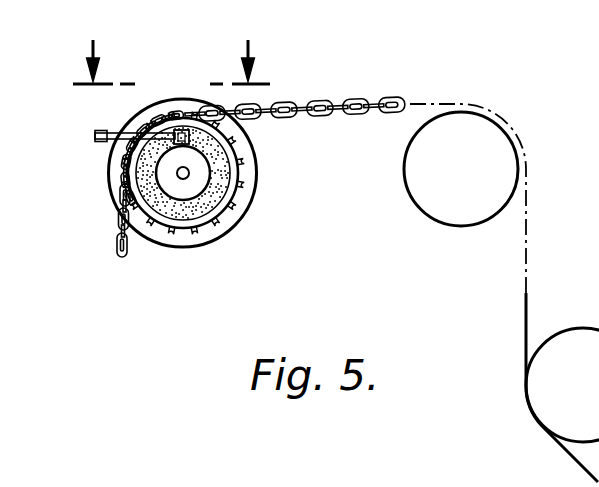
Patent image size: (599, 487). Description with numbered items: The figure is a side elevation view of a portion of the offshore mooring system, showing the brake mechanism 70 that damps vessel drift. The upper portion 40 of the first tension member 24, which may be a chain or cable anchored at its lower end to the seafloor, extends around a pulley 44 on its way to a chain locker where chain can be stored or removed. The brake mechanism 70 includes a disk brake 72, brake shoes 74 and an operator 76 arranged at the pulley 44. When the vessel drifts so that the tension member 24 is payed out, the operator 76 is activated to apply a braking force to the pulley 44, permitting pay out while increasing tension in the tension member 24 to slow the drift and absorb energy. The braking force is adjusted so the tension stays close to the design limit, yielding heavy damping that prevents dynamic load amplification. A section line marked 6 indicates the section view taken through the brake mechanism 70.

The section line 6- 6 is at (171, 47).
The tension member 24 is at (526, 314).
The upper portion 40 is at (325, 97).
The pulley 44 is at (243, 185).
The brake mechanism 70 is at (174, 88).
The disk brake 72 is at (212, 212).
The brake shoes 74 is at (243, 129).
The operator 76 is at (104, 146).